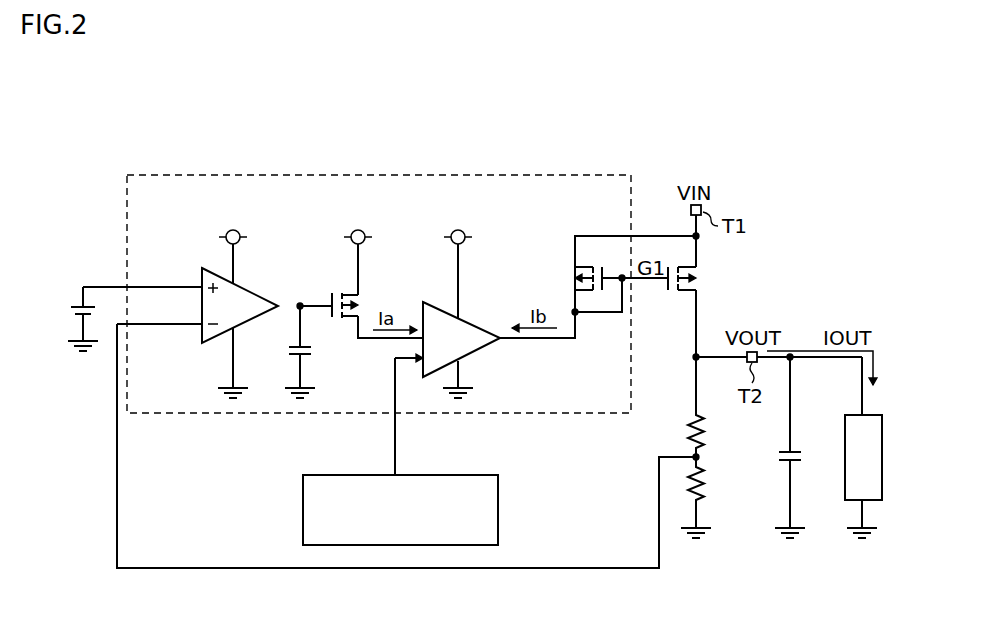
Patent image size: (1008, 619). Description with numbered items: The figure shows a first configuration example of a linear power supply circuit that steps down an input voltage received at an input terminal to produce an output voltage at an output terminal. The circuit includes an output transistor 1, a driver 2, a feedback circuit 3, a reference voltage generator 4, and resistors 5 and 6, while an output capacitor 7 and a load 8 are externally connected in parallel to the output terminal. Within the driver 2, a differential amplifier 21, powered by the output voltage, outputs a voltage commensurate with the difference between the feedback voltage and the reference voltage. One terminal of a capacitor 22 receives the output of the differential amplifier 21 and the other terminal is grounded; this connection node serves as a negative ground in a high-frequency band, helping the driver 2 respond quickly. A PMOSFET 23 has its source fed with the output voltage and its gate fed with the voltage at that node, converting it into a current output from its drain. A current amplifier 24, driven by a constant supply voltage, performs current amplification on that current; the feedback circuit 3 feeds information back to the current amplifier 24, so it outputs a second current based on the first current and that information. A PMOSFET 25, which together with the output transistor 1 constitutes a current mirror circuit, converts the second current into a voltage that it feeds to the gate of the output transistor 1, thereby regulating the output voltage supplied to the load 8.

The output transistor 1 is at (701, 280).
The driver 2 is at (380, 175).
The feedback circuit 3 is at (492, 474).
The reference voltage generator 4 is at (70, 318).
The resistor 5 is at (707, 433).
The resistor 6 is at (707, 488).
The output capacitor 7 is at (804, 457).
The load 8 is at (879, 457).
The differential amplifier 21 is at (238, 295).
The capacitor 22 is at (316, 352).
The PMOSFET 23 is at (364, 306).
The current amplifier 24 is at (465, 328).
The PMOSFET 25 is at (572, 281).